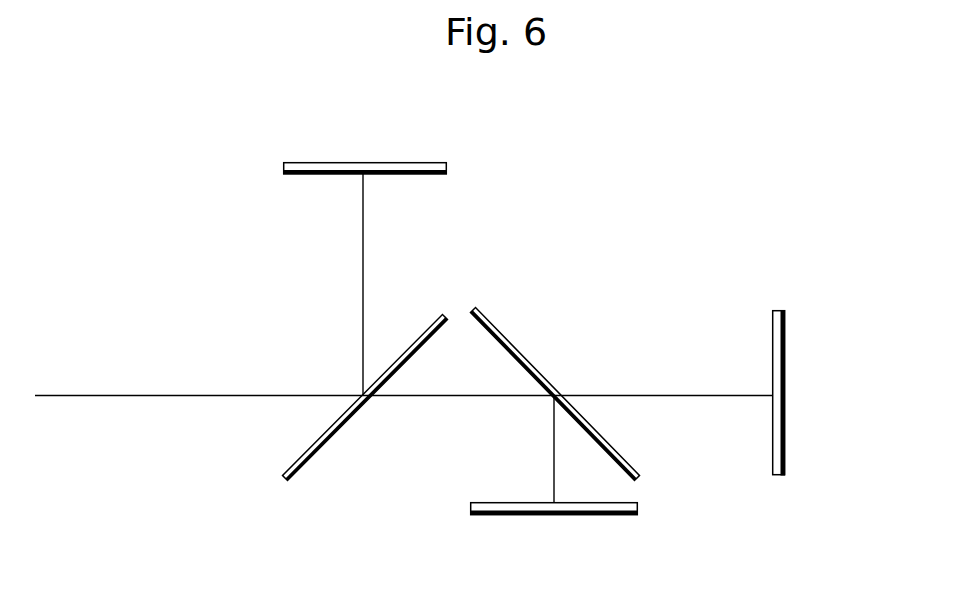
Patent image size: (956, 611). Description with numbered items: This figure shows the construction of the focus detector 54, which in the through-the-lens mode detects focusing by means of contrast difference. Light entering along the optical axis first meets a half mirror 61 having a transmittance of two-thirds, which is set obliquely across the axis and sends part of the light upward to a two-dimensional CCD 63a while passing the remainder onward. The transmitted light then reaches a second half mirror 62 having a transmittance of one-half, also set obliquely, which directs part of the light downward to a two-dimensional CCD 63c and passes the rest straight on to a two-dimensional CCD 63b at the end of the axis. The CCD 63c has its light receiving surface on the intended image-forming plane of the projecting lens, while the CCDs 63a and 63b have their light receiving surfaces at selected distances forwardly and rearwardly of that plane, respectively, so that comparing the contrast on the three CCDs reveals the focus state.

The focus detector 54 is at (716, 116).
The half mirror 61 is at (431, 317).
The half mirror 62 is at (493, 322).
The two-dimensional CCD 63a is at (405, 162).
The two-dimensional CCD 63b is at (785, 420).
The two-dimensional CCD 63c is at (605, 515).